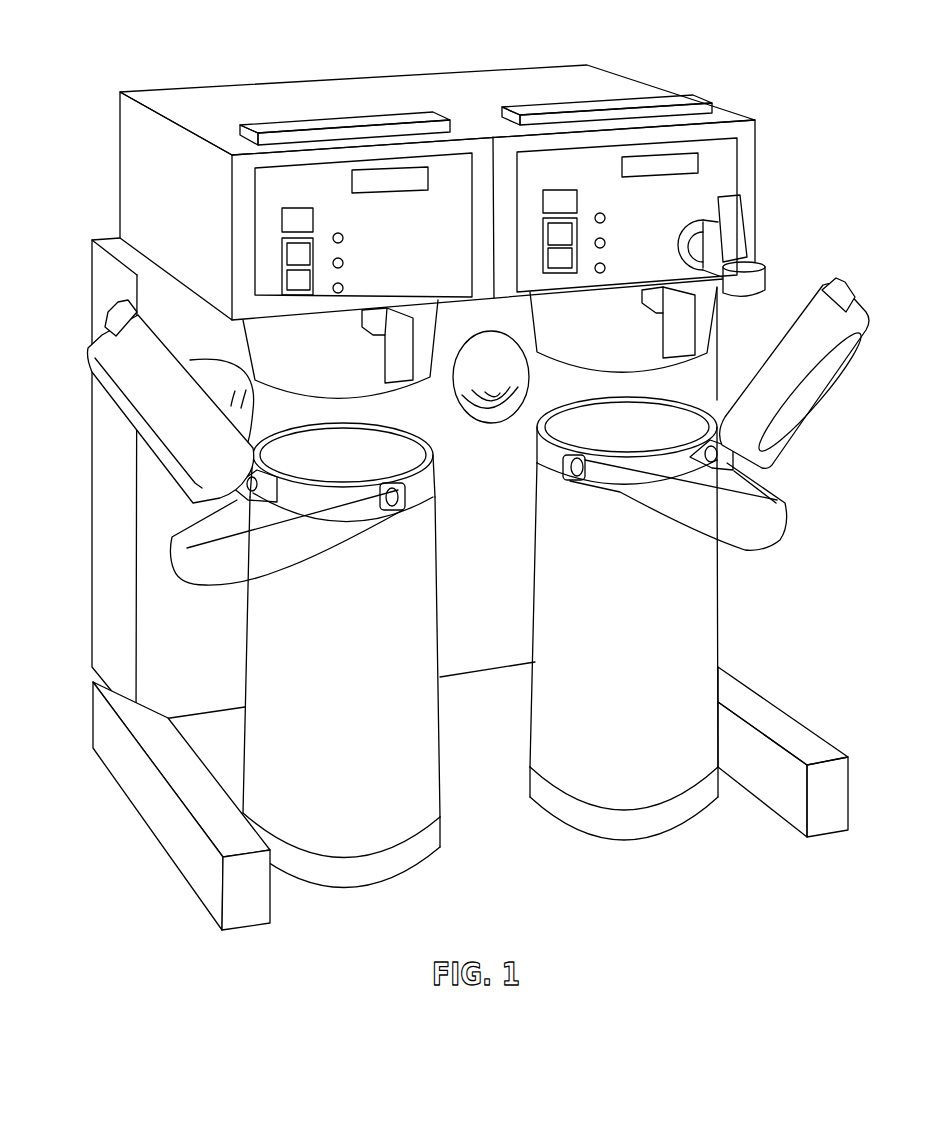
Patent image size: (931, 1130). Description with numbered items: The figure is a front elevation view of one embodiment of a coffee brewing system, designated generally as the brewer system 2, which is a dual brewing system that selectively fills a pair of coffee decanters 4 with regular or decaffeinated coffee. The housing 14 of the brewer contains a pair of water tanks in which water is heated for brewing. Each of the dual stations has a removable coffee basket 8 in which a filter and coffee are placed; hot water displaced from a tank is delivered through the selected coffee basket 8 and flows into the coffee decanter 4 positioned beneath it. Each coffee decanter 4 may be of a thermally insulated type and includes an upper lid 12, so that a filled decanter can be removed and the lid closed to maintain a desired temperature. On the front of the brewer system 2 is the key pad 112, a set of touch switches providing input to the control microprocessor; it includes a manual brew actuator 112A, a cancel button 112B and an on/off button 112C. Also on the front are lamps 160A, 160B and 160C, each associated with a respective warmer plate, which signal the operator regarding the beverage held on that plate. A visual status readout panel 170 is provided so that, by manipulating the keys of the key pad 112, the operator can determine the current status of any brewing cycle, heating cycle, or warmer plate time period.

The brewer system 2 is at (257, 52).
The coffee decanter 4 is at (337, 678).
The coffee basket 8 is at (298, 361).
The upper lid 12 is at (130, 410).
The housing 14 is at (503, 516).
The key pad 112 is at (568, 184).
The manual brew actuator 112A is at (288, 217).
The cancel button 112B is at (287, 248).
The on/off button 112C is at (288, 287).
The lamp 160A is at (341, 234).
The lamp 160B is at (341, 259).
The lamp 160C is at (341, 286).
The visual status readout panel 170 is at (387, 173).